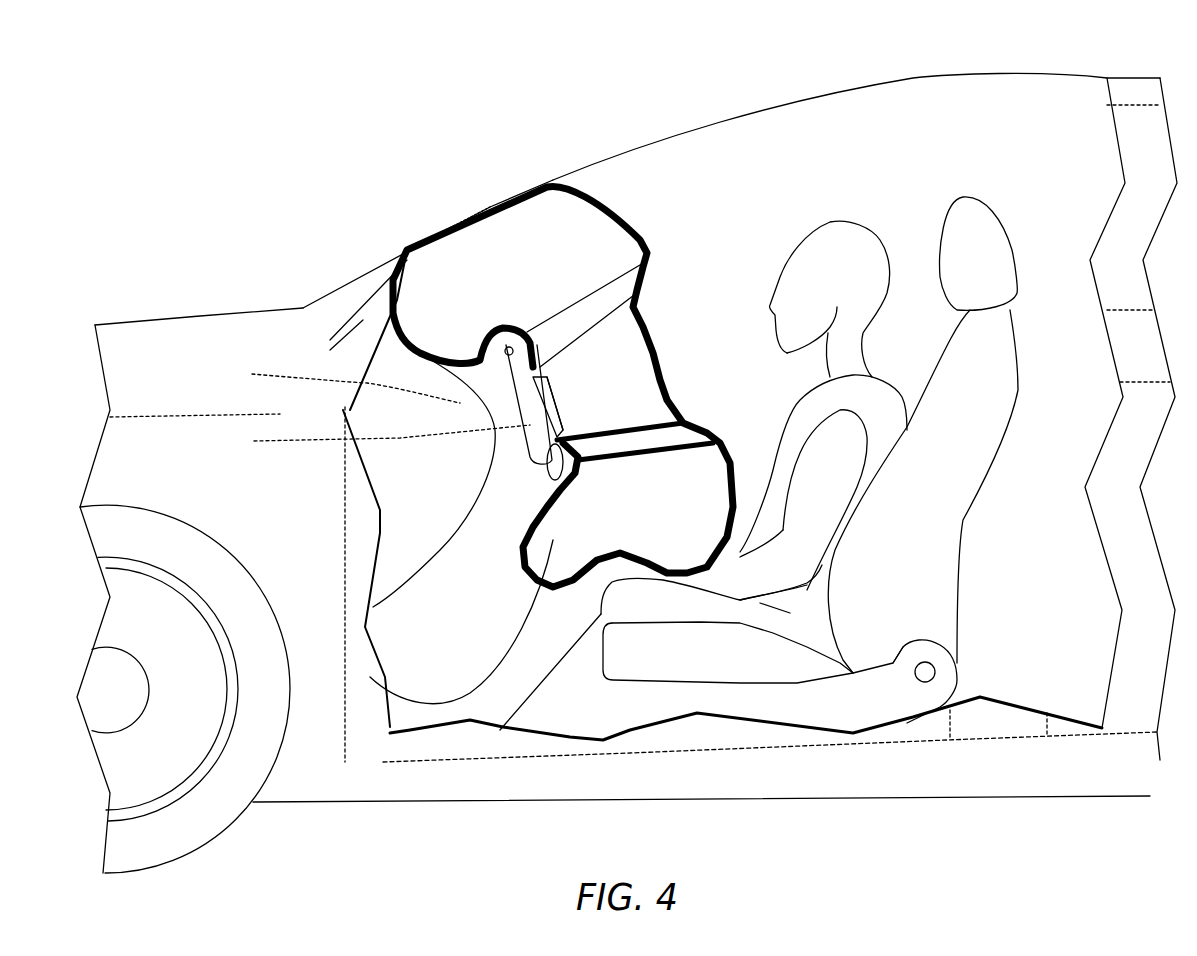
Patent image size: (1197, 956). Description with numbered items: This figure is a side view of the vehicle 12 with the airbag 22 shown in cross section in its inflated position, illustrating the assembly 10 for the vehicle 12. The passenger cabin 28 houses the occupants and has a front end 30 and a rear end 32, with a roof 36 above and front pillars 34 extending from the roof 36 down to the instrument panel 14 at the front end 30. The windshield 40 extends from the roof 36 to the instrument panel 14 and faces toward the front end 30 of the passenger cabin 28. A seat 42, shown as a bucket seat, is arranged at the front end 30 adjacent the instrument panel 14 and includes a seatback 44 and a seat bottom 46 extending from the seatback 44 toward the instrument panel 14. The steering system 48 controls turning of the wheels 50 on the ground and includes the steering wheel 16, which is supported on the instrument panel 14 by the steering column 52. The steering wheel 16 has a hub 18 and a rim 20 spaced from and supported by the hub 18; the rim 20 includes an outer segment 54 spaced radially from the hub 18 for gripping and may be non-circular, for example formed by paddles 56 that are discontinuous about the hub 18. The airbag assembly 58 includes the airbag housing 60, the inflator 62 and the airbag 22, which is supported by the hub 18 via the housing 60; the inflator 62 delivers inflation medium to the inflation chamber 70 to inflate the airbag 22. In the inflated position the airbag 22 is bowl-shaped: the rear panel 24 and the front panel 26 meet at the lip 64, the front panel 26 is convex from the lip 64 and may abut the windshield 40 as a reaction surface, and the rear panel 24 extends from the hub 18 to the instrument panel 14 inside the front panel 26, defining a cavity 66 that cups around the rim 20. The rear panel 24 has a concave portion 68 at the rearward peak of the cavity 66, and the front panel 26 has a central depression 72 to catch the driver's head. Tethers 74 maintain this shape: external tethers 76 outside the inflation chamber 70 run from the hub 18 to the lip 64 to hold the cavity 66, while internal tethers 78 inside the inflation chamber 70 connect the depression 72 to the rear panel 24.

The assembly 10 is at (173, 140).
The vehicle 12 is at (137, 260).
The instrument panel 14 is at (355, 305).
The steering wheel 16 is at (400, 640).
The hub 18 is at (340, 381).
The rim 20 is at (376, 440).
The airbag 22 is at (567, 227).
The rear panel 24 is at (528, 487).
The front panel 26 is at (622, 221).
The passenger cabin 28 is at (703, 253).
The front end 30 is at (467, 553).
The rear end 32 is at (1032, 660).
The front pillar 34 is at (358, 305).
The roof 36 is at (1040, 74).
The windshield 40 is at (413, 290).
The seat 42 is at (887, 623).
The seatback 44 is at (937, 493).
The seat bottom 46 is at (802, 670).
The steering system 48 is at (500, 343).
The wheels 50 is at (207, 840).
The steering column 52 is at (507, 443).
The outer segment 54 is at (547, 403).
The paddles 56 is at (380, 607).
The airbag assembly 58 is at (512, 182).
The airbag housing 60 is at (565, 432).
The inflator 62 is at (547, 417).
The lip 64 is at (390, 360).
The cavity 66 is at (523, 467).
The concave portion 68 is at (580, 493).
The inflation chamber 70 is at (488, 237).
The depression 72 is at (540, 368).
The tethers 74 is at (607, 275).
The external tethers 76 is at (553, 480).
The internal tethers 78 is at (660, 457).